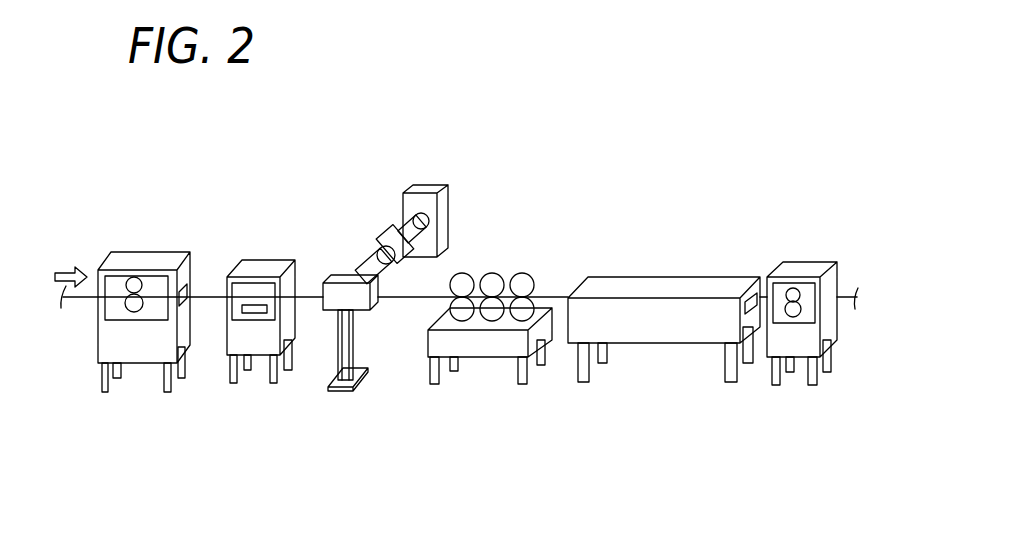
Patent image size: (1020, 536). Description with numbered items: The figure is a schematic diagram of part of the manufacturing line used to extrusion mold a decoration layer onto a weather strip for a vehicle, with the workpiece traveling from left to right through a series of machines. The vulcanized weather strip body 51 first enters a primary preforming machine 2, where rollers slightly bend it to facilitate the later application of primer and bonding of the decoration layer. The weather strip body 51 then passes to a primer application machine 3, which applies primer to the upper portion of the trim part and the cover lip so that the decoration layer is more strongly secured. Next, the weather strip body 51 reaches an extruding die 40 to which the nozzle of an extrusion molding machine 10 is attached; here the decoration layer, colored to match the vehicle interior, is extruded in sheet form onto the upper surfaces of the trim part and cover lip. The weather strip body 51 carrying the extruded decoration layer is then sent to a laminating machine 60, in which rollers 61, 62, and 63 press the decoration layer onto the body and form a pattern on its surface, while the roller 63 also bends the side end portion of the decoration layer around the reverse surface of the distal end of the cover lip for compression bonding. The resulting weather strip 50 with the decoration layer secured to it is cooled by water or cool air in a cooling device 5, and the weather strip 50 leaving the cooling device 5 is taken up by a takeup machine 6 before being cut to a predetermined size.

The primary preforming machine 2 is at (145, 250).
The primer application machine 3 is at (267, 260).
The extrusion molding machine 10 is at (428, 188).
The extruding die 40 is at (333, 310).
The laminating machine 60 is at (480, 360).
The roller 61 is at (463, 273).
The roller 62 is at (495, 273).
The roller 63 is at (530, 270).
The cooling device 5 is at (667, 277).
The takeup machine 6 is at (805, 262).
The weather strip 50 is at (842, 303).
The weather strip body 51 is at (75, 300).